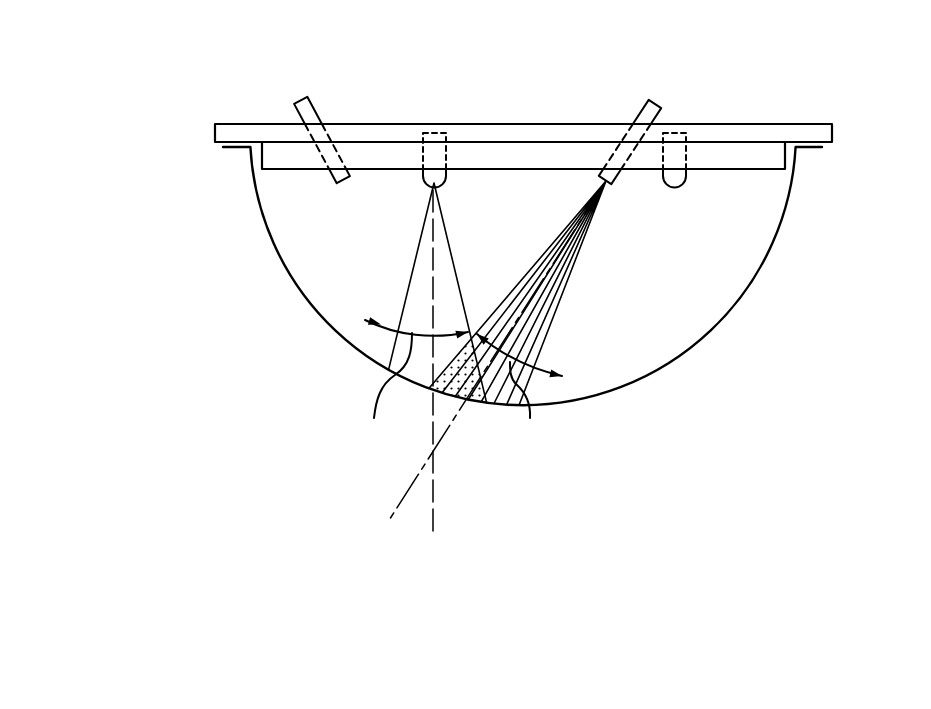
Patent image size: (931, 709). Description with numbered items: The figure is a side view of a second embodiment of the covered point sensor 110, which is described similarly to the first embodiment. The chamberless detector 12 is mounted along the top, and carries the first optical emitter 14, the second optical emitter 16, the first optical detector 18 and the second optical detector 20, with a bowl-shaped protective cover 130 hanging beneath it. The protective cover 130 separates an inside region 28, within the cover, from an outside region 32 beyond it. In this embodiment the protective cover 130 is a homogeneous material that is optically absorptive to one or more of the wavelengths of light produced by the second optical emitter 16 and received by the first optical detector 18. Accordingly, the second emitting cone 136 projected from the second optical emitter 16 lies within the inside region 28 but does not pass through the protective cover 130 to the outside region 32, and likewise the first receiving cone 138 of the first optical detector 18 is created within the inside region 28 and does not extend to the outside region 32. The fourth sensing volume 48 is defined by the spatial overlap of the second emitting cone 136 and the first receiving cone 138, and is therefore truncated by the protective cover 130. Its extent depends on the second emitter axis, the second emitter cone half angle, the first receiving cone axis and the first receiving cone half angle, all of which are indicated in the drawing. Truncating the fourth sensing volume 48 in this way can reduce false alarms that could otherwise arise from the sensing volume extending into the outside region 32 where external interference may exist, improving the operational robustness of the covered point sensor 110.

The covered point sensor 110 is at (122, 102).
The chamberless detector 12 is at (523, 123).
The first optical emitter 14 is at (310, 106).
The second optical emitter 16 is at (648, 108).
The first optical detector 18 is at (442, 177).
The second optical detector 20 is at (674, 186).
The inside region 28 is at (309, 231).
The protective cover 130 is at (288, 272).
The outside region 32 is at (267, 382).
The fourth sensing volume 48 is at (462, 367).
The second emitting cone 136 is at (552, 333).
The first receiving cone 138 is at (409, 281).